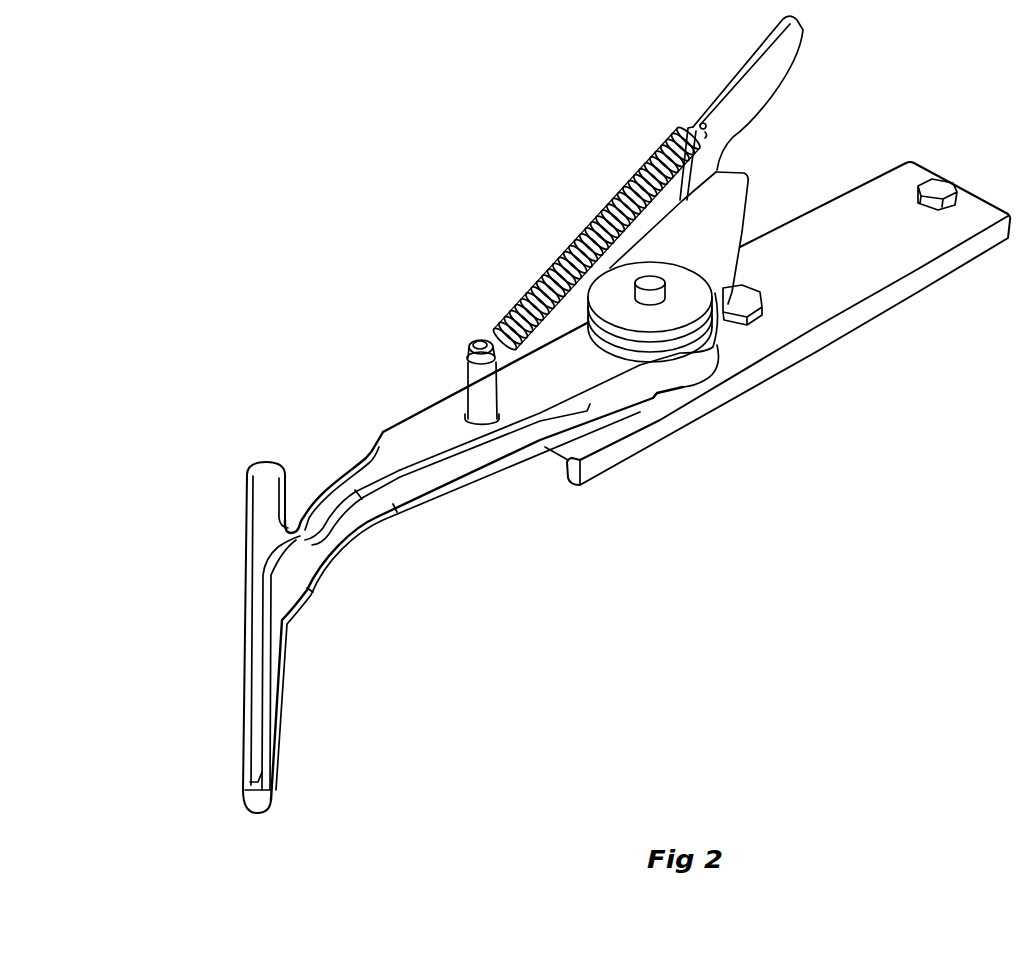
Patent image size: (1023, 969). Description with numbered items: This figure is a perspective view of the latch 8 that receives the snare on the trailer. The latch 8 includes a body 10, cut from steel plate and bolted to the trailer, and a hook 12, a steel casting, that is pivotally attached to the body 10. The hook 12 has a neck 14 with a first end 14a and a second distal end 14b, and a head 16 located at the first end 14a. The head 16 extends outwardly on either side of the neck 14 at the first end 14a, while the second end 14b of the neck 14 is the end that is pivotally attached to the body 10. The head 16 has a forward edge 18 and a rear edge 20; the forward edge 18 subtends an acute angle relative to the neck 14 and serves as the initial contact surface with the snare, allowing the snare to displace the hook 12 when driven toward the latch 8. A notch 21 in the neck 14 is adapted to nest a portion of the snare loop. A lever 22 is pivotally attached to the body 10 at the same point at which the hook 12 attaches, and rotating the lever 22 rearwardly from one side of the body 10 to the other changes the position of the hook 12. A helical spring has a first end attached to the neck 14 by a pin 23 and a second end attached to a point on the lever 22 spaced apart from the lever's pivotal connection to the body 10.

The latch 8 is at (550, 244).
The body 10 is at (912, 160).
The hook 12 is at (316, 596).
The neck 14 is at (510, 462).
The first end of the neck 14a is at (285, 475).
The second distal end of the neck 14b is at (688, 375).
The head 16 is at (262, 508).
The forward edge 18 is at (238, 651).
The rear edge 20 is at (290, 496).
The notch 21 is at (298, 524).
The lever 22 is at (743, 72).
The pin 23 is at (478, 382).